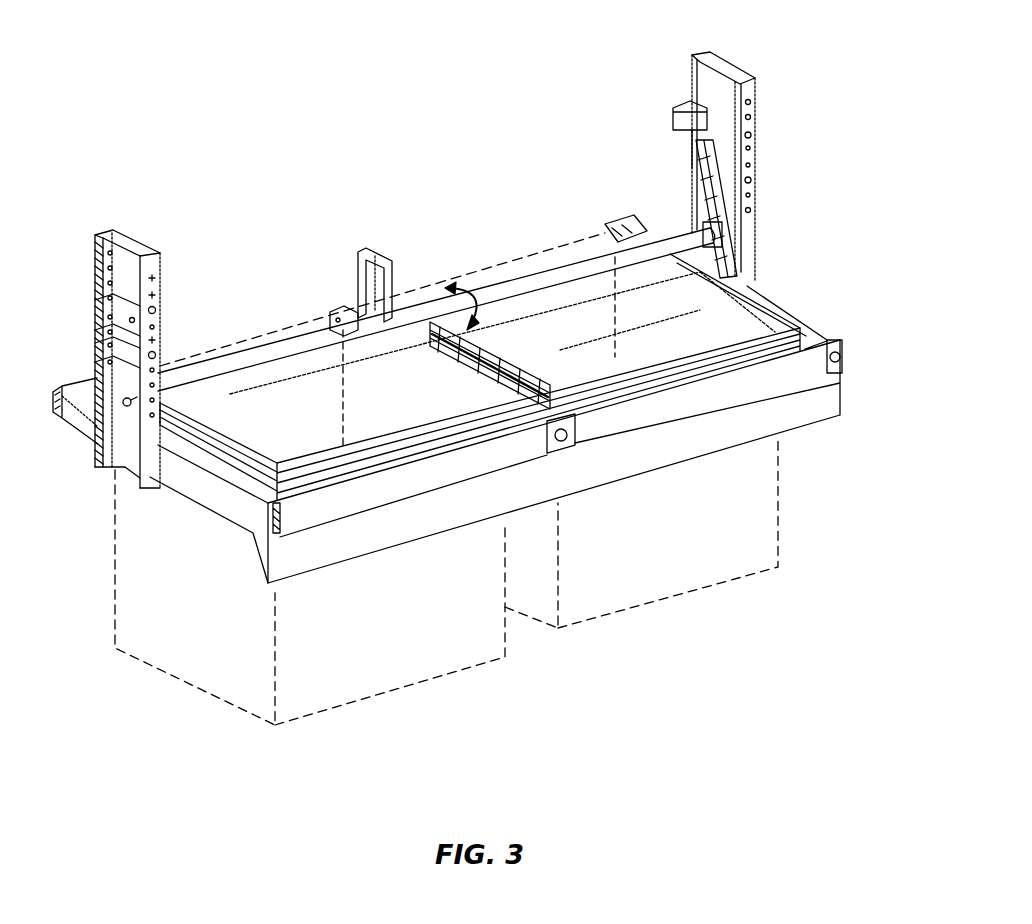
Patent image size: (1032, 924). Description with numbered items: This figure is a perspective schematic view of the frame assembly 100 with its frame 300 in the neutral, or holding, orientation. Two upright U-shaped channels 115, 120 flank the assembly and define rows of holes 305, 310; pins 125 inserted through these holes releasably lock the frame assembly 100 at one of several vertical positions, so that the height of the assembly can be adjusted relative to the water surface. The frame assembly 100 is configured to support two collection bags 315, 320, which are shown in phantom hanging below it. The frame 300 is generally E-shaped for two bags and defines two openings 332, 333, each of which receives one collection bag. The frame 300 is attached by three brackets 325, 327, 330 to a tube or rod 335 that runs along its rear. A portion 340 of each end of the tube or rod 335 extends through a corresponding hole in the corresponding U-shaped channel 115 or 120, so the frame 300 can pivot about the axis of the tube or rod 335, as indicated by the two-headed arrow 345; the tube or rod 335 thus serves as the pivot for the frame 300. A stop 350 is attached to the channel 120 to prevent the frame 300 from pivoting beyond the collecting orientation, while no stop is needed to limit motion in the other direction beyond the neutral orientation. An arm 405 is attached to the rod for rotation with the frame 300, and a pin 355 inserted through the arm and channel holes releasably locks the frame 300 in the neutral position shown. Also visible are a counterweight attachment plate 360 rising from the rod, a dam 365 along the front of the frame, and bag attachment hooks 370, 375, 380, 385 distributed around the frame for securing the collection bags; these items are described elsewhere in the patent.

The frame assembly 100 is at (398, 146).
The U-shaped channel 115 is at (137, 240).
The U-shaped channel 120 is at (710, 63).
The pins 125 is at (112, 298).
The frame 300 is at (485, 434).
The holes 305 is at (154, 296).
The holes 310 is at (750, 100).
The collection bag 315 is at (398, 688).
The collection bag 320 is at (683, 594).
The bracket 325 is at (168, 445).
The bracket 327 is at (430, 348).
The bracket 330 is at (483, 377).
The opening 332 is at (287, 427).
The opening 333 is at (563, 347).
The tube or rod 335 is at (462, 302).
The portion 340 is at (128, 412).
The two-headed arrow 345 is at (462, 284).
The stop 350 is at (673, 115).
The pin 355 is at (692, 153).
The counterweight attachment plate 360 is at (376, 256).
The dam 365 is at (415, 530).
The bag attachment hook 370 is at (57, 404).
The bag attachment hook 375 is at (326, 300).
The bag attachment hook 380 is at (280, 533).
The bag attachment hook 385 is at (837, 374).
The arm 405 is at (700, 193).